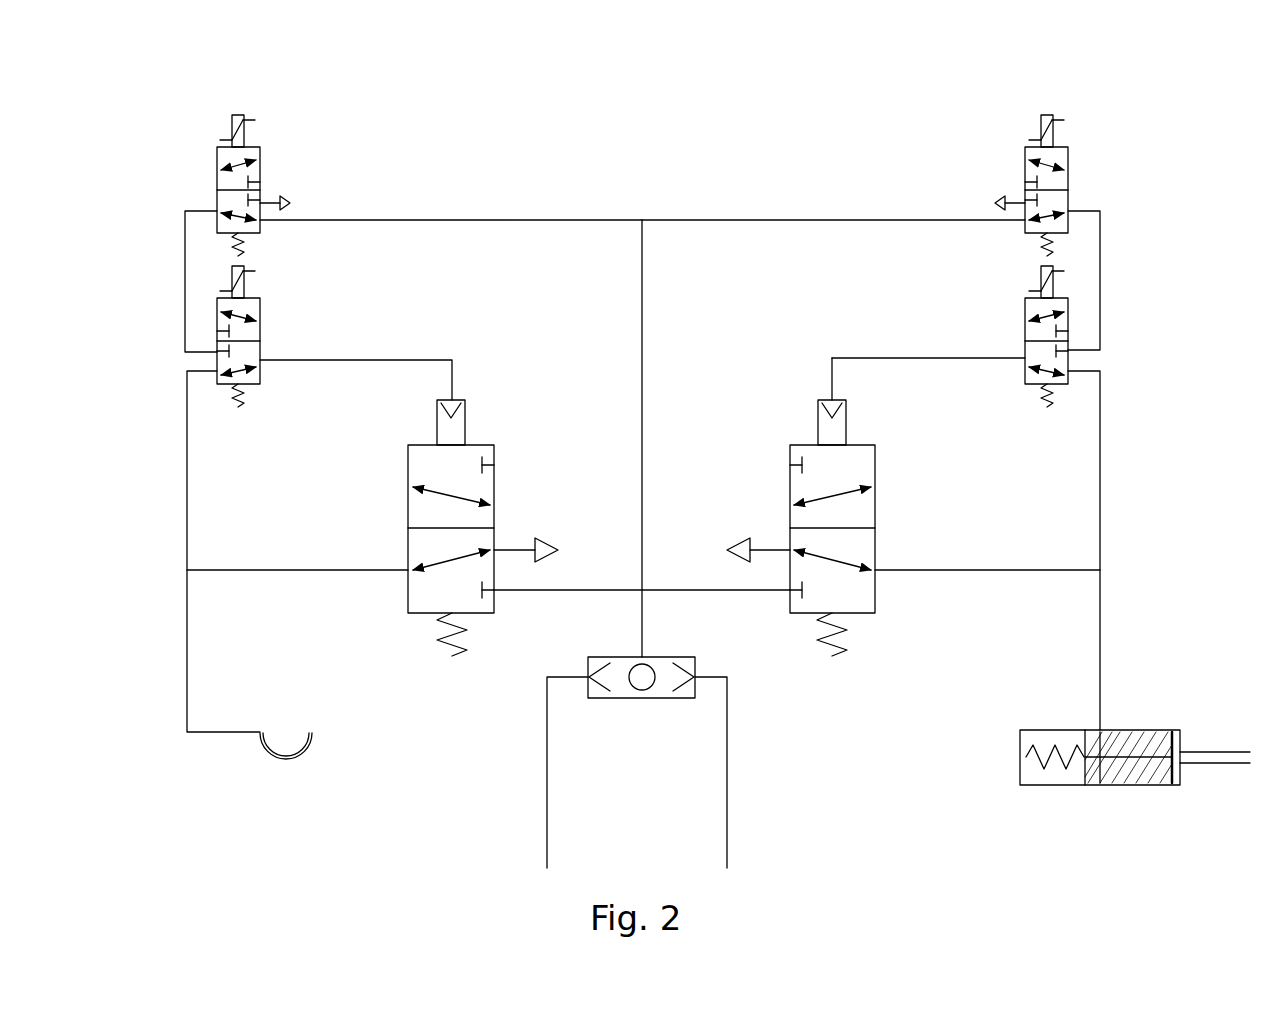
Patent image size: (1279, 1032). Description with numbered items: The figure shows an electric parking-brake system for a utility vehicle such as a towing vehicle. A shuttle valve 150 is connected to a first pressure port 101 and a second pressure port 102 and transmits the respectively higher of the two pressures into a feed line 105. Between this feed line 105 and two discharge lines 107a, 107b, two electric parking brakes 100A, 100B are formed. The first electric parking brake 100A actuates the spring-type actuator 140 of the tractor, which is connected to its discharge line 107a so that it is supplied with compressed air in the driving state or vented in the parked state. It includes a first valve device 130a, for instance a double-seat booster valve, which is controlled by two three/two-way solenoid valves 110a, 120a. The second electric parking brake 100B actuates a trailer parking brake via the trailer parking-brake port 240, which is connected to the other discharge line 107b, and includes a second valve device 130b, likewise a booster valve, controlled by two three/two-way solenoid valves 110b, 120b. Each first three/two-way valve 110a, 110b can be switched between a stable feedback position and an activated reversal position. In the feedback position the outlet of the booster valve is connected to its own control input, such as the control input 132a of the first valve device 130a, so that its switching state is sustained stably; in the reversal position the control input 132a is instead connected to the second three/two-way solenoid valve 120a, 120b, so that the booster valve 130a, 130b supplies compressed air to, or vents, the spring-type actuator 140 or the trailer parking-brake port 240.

The first electric parking brake 100A is at (881, 138).
The second electric parking brake 100B is at (478, 158).
The first pressure port 101 is at (546, 795).
The second pressure port 102 is at (728, 775).
The feed line 105 is at (644, 632).
The discharge line 107a is at (1098, 692).
The discharge line 107b is at (188, 690).
The first 3/2-way solenoid valve 110a is at (1069, 322).
The first 3/2-way solenoid valve 110b is at (216, 322).
The second 3/2-way solenoid valve 120a is at (1069, 190).
The second 3/2-way solenoid valve 120b is at (216, 190).
The first valve device 130a is at (876, 538).
The second valve device 130b is at (495, 493).
The control input 132a is at (820, 415).
The spring-type actuator 140 is at (1068, 788).
The shuttle valve 150 is at (655, 700).
The trailer parking-brake port 240 is at (280, 765).